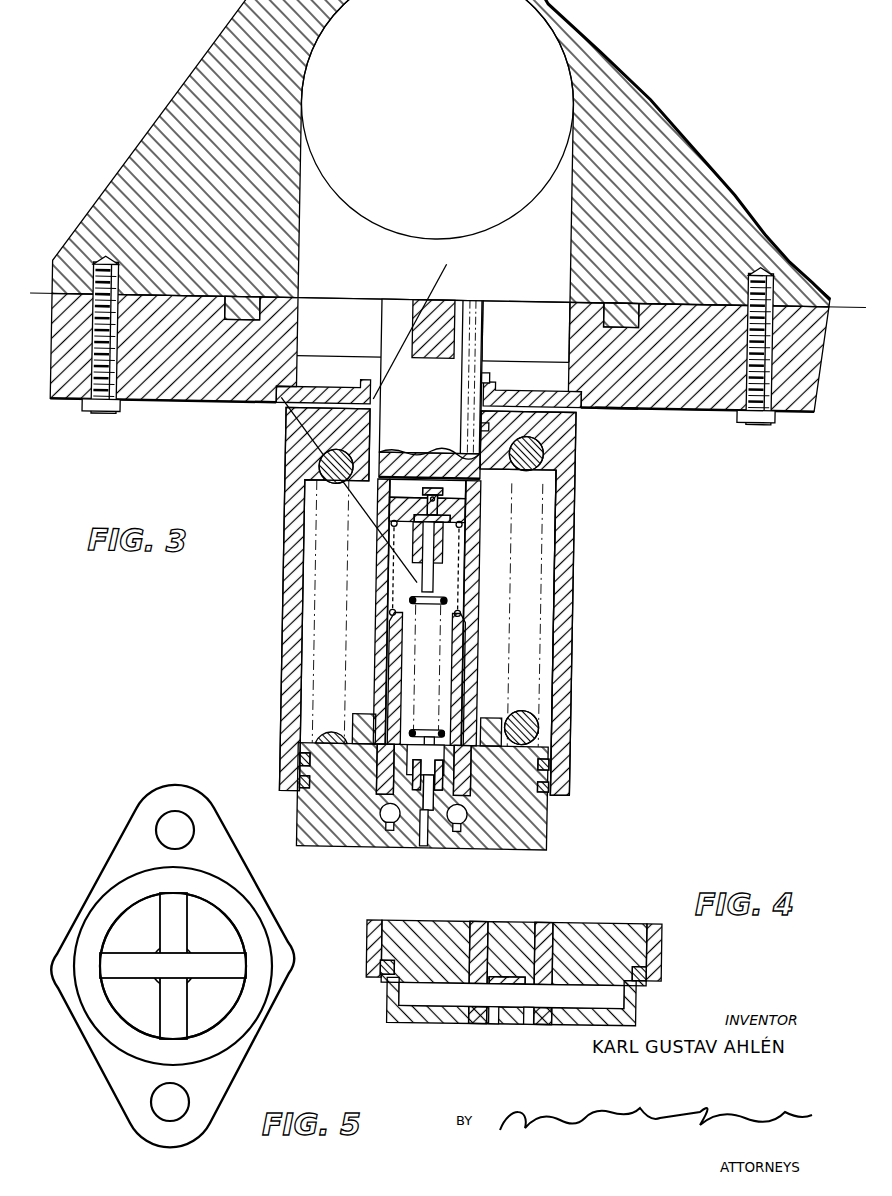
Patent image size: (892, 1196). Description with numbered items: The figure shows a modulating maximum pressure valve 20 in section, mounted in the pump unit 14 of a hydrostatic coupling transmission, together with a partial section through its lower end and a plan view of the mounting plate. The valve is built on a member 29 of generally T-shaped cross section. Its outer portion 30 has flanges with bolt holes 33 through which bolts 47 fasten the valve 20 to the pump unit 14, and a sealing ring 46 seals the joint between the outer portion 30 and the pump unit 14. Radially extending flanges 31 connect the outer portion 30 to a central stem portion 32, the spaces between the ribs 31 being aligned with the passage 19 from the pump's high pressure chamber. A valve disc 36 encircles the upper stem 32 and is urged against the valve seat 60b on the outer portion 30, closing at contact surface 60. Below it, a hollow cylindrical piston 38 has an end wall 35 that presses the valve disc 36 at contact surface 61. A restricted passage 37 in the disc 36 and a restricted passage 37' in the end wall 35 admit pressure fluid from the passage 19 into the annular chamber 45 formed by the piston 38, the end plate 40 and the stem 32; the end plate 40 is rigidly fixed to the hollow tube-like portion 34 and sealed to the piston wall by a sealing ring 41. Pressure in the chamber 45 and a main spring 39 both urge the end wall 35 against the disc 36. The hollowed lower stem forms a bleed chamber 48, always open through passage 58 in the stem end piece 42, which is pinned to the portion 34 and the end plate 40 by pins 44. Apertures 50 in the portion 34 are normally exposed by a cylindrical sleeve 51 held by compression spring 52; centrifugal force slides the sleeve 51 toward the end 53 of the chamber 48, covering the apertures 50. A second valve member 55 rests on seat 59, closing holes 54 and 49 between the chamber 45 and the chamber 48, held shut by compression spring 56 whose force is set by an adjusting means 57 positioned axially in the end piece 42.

In FIG. 3, the pump unit 14 is at (205, 85).
In FIG. 3, the passage 19 is at (422, 85).
In FIG. 3, the valve 20 is at (276, 645).
In FIG. 3, the member 29 is at (403, 410).
In FIG. 3, the outer portion 30 is at (672, 405).
In FIG. 5, the outer portion 30 is at (118, 868).
In FIG. 3, the radially extending flanges 31 is at (423, 312).
In FIG. 5, the radially extending flanges 31 is at (160, 922).
In FIG. 3, the central stem portion 32 is at (490, 348).
In FIG. 5, the central stem portion 32 is at (190, 946).
In FIG. 3, the bolt holes 33 is at (90, 403).
In FIG. 5, the bolt holes 33 is at (160, 818).
In FIG. 3, the hollow tube-like portion 34 is at (475, 578).
In FIG. 4, the hollow tube-like portion 34 is at (548, 1022).
In FIG. 3, the end wall 35 is at (300, 437).
In FIG. 3, the valve disc 36 is at (580, 412).
In FIG. 3, the restricted passage 37 is at (464, 375).
In FIG. 3, the restricted passage 37' is at (462, 428).
In FIG. 3, the hollow cylindrical piston 38 is at (580, 565).
In FIG. 4, the hollow cylindrical piston 38 is at (368, 942).
In FIG. 3, the main spring 39 is at (345, 474).
In FIG. 3, the end plate 40 is at (540, 822).
In FIG. 4, the end plate 40 is at (397, 1022).
In FIG. 3, the sealing ring 41 is at (558, 762).
In FIG. 4, the sealing ring 41 is at (648, 969).
In FIG. 3, the stem end piece 42 is at (404, 832).
In FIG. 4, the stem end piece 42 is at (508, 1022).
In FIG. 3, the pins 44 is at (392, 820).
In FIG. 4, the pins 44 is at (415, 992).
In FIG. 3, the chamber 45 is at (353, 624).
In FIG. 3, the sealing ring 46 is at (586, 300).
In FIG. 3, the bolts 47 is at (120, 406).
In FIG. 3, the bleed chamber 48 is at (420, 575).
In FIG. 3, the hole 49 is at (433, 498).
In FIG. 3, the apertures 50 is at (472, 618).
In FIG. 3, the cylindrical sleeve 51 is at (484, 686).
In FIG. 4, the cylindrical sleeve 51 is at (507, 925).
In FIG. 3, the compression spring 52 is at (480, 548).
In FIG. 3, the end of chamber 53 is at (468, 528).
In FIG. 3, the holes 54 is at (468, 490).
In FIG. 3, the second valve member 55 is at (400, 527).
In FIG. 3, the compression spring 56 is at (452, 600).
In FIG. 3, the adjusting means 57 is at (414, 836).
In FIG. 4, the passage 58 is at (492, 1022).
In FIG. 3, the seat 59 is at (448, 512).
In FIG. 3, the contact surface 60 is at (282, 392).
In FIG. 3, the valve seat 60b is at (615, 405).
In FIG. 3, the contact surface 61 is at (478, 402).